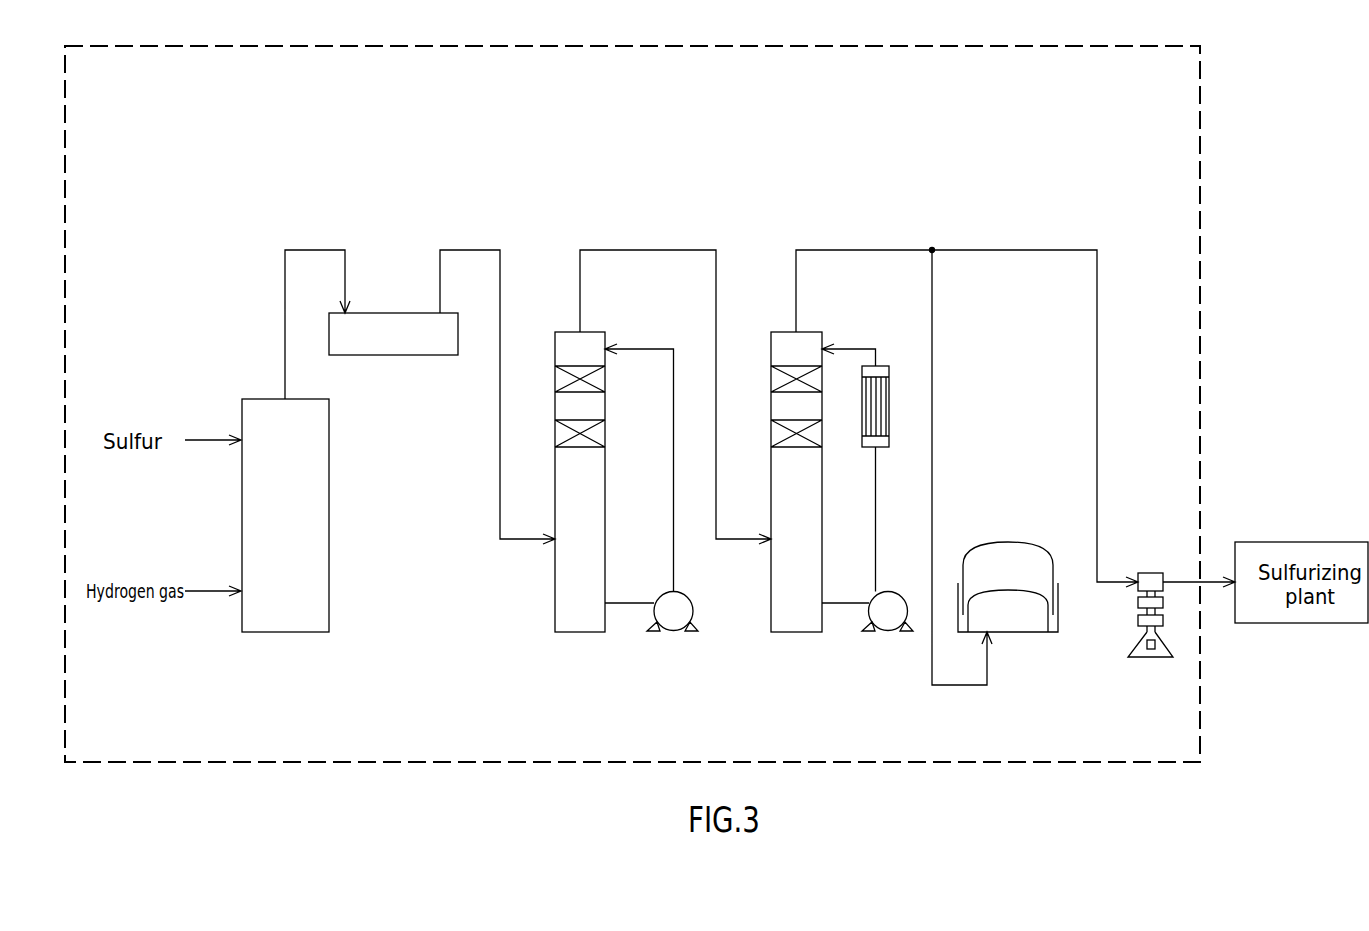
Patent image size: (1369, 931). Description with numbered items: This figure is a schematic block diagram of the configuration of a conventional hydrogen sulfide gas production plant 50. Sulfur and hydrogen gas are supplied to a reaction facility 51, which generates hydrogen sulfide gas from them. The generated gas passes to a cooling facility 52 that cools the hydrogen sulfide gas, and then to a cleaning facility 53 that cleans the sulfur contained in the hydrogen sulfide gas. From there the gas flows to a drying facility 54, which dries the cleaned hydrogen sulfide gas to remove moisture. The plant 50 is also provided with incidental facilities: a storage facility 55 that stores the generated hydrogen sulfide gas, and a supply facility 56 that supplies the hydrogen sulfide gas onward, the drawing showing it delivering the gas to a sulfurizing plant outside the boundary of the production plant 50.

The hydrogen sulfide gas production plant 50 is at (686, 104).
The reaction facility 51 is at (329, 571).
The cooling facility 52 is at (394, 313).
The cleaning facility 53 is at (632, 648).
The drying facility 54 is at (847, 648).
The storage facility 55 is at (1008, 541).
The supply facility 56 is at (1150, 573).